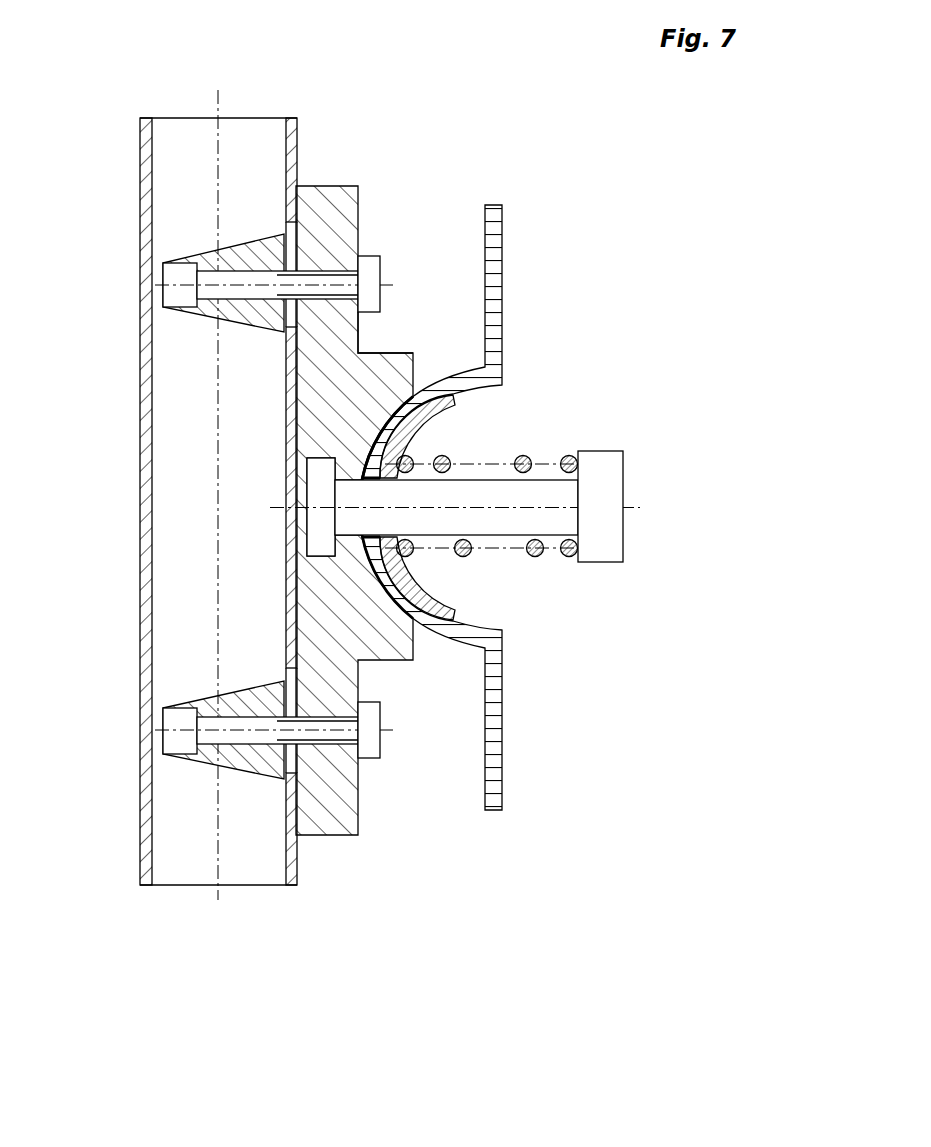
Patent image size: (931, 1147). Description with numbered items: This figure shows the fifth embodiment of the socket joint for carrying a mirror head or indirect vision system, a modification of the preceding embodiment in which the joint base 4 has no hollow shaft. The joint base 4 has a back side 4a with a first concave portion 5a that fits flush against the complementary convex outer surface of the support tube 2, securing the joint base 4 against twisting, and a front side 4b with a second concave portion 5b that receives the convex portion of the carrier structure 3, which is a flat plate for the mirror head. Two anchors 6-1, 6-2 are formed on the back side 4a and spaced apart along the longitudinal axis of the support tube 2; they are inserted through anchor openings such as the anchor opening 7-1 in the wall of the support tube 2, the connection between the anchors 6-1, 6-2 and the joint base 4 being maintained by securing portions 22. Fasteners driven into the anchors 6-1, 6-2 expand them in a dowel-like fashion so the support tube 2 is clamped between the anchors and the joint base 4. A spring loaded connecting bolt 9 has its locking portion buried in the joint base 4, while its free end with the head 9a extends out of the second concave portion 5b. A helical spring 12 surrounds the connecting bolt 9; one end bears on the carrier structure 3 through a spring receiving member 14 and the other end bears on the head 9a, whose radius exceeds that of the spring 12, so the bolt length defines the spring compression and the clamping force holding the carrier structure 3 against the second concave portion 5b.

The support tube 2 is at (143, 557).
The carrier structure 3 is at (504, 695).
The joint base 4 is at (347, 635).
The back side 4a is at (358, 335).
The front side 4b is at (417, 382).
The first concave portion 5a is at (358, 335).
The second concave portion 5b is at (395, 407).
The anchor 6-1 is at (258, 250).
The anchor 6-2 is at (260, 762).
The anchor opening 7-1 is at (293, 247).
The spring loaded connecting bolt 9 is at (530, 500).
The head 9a is at (610, 490).
The helical spring 12 is at (523, 455).
The spring receiving member 14 is at (453, 605).
The securing portion 22 is at (320, 471).